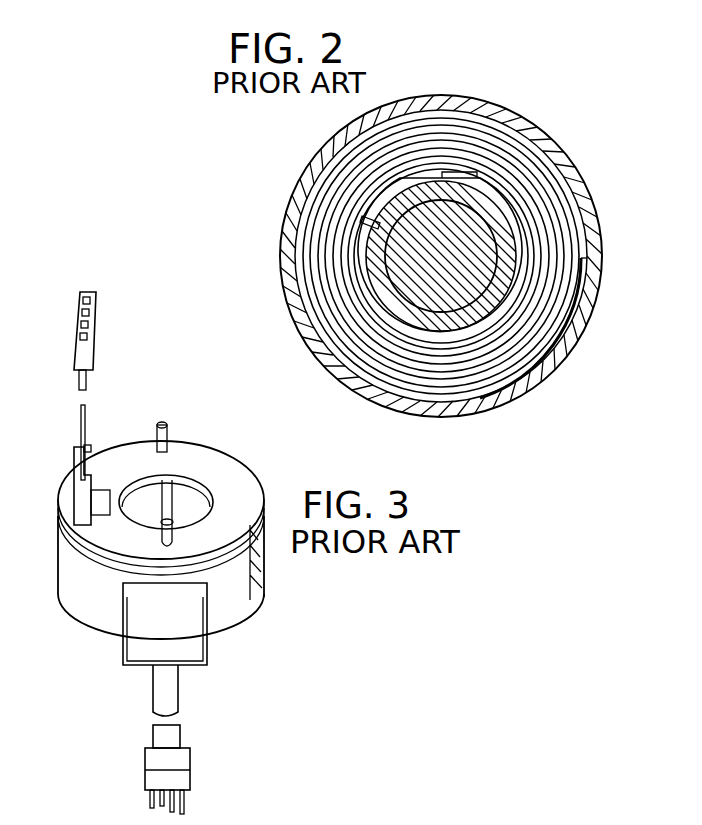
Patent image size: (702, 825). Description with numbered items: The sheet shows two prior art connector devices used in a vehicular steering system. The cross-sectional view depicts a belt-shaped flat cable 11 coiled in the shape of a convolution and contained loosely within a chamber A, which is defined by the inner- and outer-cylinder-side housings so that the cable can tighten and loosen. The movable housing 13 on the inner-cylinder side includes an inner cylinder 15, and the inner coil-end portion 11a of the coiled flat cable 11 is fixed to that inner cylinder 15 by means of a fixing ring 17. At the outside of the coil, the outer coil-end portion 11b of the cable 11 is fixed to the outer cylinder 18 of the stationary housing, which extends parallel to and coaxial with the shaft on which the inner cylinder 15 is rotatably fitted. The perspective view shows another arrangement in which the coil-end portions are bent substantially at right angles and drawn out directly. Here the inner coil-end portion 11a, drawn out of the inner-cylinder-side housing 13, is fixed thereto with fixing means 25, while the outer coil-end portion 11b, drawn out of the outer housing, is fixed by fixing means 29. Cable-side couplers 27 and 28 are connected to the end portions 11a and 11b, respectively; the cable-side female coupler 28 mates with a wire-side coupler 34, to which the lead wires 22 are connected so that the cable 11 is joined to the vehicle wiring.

In FIG. 2, the flat cable 11 is at (530, 152).
In FIG. 2, the inner coil-end portion 11a is at (512, 228).
In FIG. 3, the inner coil-end portion 11a is at (85, 413).
In FIG. 2, the outer coil-end portion 11b is at (587, 323).
In FIG. 3, the outer coil-end portion 11b is at (175, 693).
In FIG. 3, the movable housing 13 is at (240, 475).
In FIG. 2, the inner cylinder 15 is at (387, 272).
In FIG. 2, the fixing ring 17 is at (525, 250).
In FIG. 2, the outer cylinder 18 is at (575, 182).
In FIG. 3, the outer cylinder 18 is at (248, 605).
In FIG. 3, the lead wires 22 is at (182, 803).
In FIG. 3, the fixing means 25 is at (80, 500).
In FIG. 3, the cable-side coupler 27 is at (82, 358).
In FIG. 3, the cable-side coupler 28 is at (150, 760).
In FIG. 3, the fixing means 29 is at (207, 648).
In FIG. 3, the wire-side coupler 34 is at (185, 780).
In FIG. 2, the chamber A is at (332, 190).